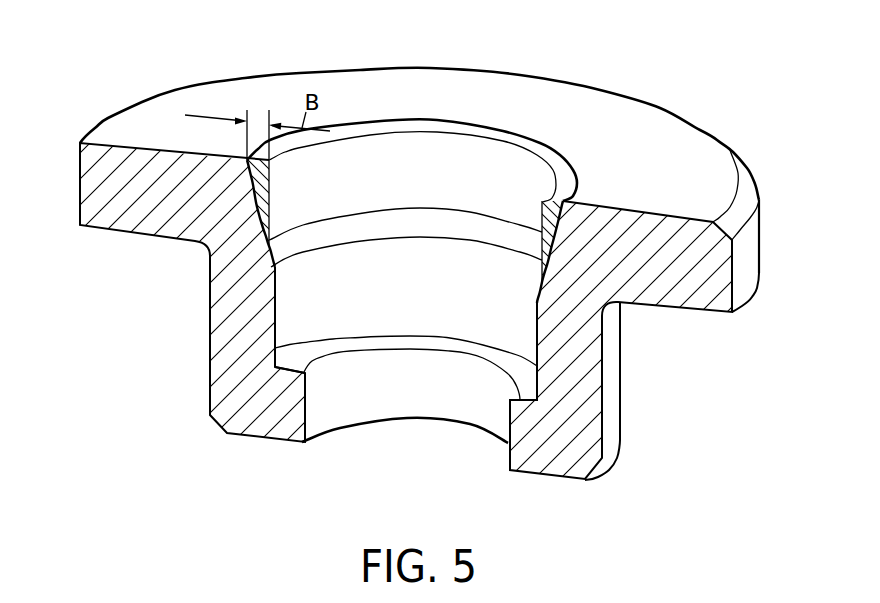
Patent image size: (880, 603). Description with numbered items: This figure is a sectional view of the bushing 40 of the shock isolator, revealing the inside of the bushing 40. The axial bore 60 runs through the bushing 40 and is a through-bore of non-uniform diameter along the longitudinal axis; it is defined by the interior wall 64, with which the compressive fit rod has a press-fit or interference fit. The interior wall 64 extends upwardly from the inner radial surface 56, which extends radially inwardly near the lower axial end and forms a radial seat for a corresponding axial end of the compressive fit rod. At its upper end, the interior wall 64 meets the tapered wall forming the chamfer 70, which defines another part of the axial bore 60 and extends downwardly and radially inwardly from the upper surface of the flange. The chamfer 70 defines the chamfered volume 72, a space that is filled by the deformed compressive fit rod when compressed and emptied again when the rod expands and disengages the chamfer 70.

The bushing 40 is at (212, 110).
The chamfered volume 72 is at (488, 162).
The chamfer 70 is at (258, 203).
The interior wall 64 is at (277, 307).
The inner radial surface 56 is at (307, 367).
The axial bore 60 is at (470, 301).